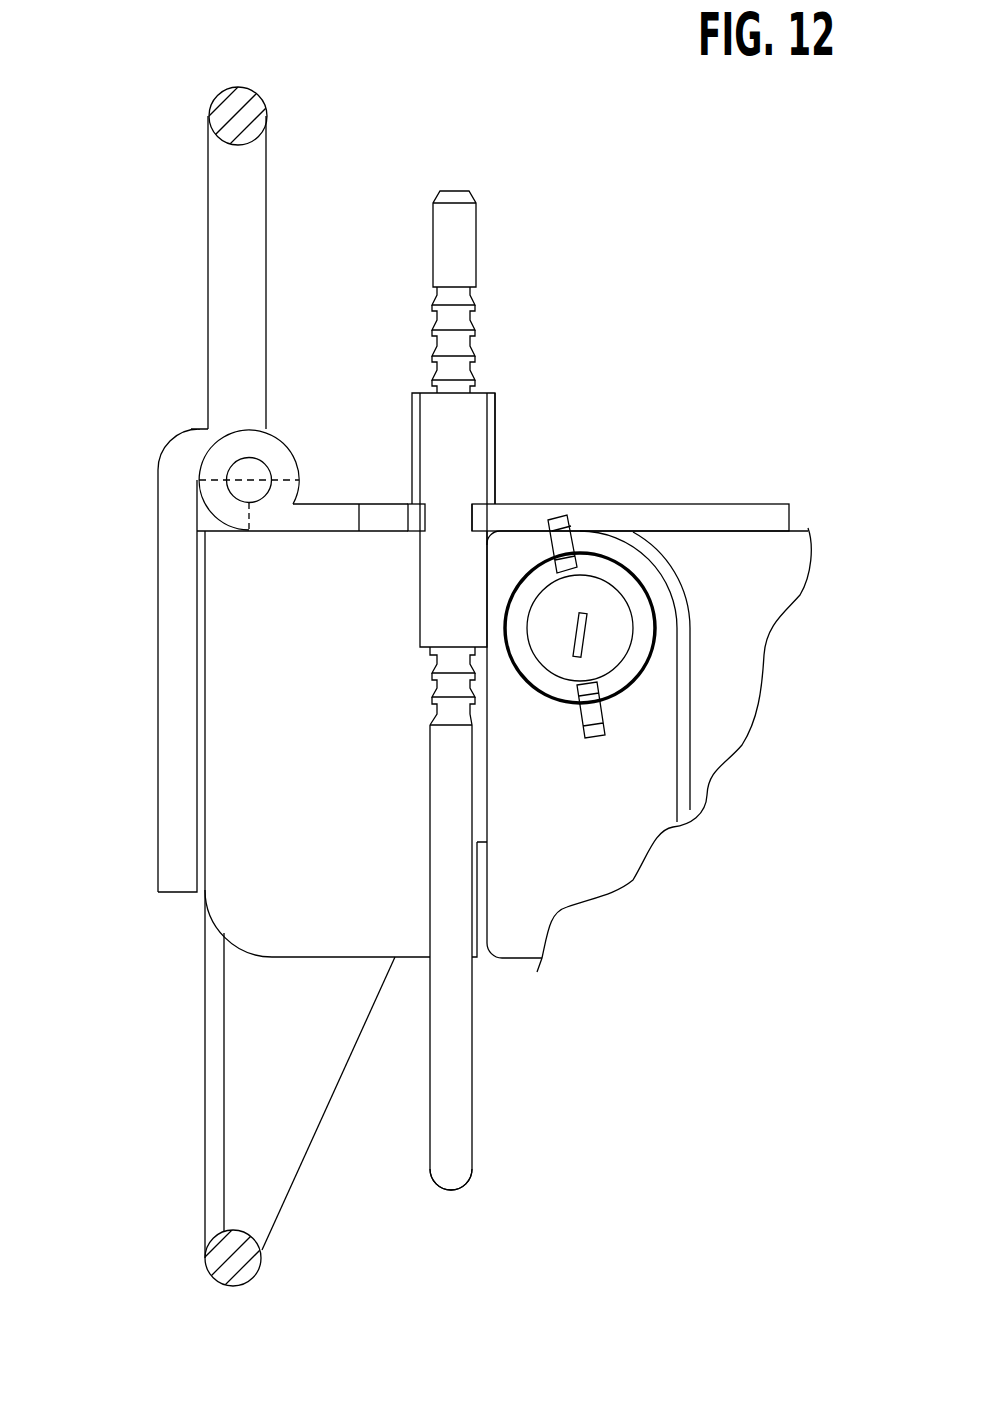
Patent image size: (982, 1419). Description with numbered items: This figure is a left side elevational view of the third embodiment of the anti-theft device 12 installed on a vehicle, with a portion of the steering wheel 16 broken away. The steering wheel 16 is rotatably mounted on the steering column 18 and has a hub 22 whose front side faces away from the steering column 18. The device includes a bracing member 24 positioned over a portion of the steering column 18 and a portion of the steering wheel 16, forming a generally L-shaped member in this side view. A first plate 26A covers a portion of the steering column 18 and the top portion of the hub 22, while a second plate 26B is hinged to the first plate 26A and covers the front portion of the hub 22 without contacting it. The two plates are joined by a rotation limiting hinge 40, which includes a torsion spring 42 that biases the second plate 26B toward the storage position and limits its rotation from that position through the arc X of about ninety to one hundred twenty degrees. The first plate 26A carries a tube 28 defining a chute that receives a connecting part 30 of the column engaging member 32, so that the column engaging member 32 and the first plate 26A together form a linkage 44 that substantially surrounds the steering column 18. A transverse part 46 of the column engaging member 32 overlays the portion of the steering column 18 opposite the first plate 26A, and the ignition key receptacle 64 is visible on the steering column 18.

The anti-theft device 12 is at (527, 470).
The steering wheel 16 is at (247, 1273).
The steering column 18 is at (753, 596).
The hub 22 is at (328, 751).
The bracing member 24 is at (332, 474).
The first plate 26A is at (708, 504).
The second plate 26B is at (158, 675).
The tube 28 is at (487, 417).
The connecting part 30 is at (465, 237).
The column engaging member 32 is at (494, 1103).
The rotation limiting hinge 40 is at (277, 434).
The torsion spring 42 is at (230, 466).
The linkage 44 is at (508, 495).
The transverse part 46 is at (455, 1187).
The ignition key receptacle 64 is at (596, 718).
The arc X is at (375, 542).